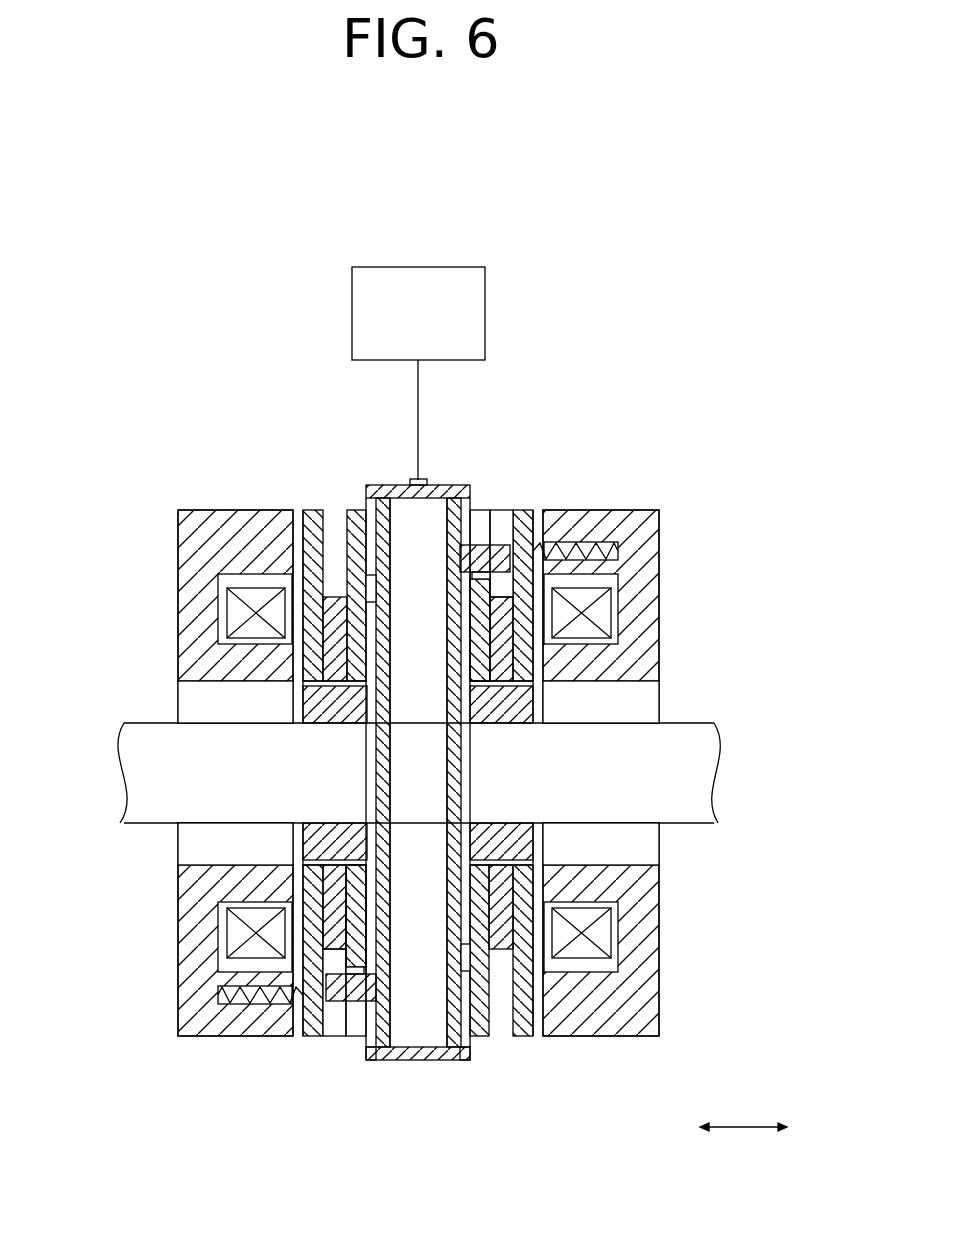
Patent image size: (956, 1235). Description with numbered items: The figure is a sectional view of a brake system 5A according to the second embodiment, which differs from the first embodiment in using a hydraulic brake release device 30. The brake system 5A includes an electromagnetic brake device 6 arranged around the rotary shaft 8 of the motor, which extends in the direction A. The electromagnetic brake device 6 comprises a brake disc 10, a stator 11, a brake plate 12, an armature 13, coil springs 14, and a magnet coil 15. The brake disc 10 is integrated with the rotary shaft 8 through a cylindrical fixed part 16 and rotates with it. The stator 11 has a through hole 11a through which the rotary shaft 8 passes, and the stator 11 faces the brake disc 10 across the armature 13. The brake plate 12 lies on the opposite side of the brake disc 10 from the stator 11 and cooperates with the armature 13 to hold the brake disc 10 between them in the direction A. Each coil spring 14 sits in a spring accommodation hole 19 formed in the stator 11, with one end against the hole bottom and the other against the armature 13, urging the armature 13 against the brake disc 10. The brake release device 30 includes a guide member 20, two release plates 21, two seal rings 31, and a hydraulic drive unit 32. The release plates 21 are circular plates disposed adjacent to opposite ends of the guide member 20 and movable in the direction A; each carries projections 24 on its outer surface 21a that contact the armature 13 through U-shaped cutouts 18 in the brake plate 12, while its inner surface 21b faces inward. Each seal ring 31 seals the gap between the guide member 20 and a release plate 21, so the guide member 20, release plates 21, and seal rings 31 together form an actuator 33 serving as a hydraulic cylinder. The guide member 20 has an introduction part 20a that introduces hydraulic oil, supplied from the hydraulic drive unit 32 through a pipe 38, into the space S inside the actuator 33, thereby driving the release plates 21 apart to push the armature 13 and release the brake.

The brake system 5A is at (641, 316).
The electromagnetic brake device 6 is at (180, 495).
The rotary shaft 8 is at (128, 772).
The brake disc 10 is at (354, 530).
The stator 11 is at (210, 545).
The through hole 11a is at (215, 863).
The brake plate 12 is at (333, 597).
The armature 13 is at (306, 530).
The coil spring 14 is at (565, 548).
The magnet coil 15 is at (235, 612).
The fixed part 16 is at (300, 708).
The cutout 18 is at (488, 548).
The spring accommodation hole 19 is at (608, 548).
The guide member 20 is at (414, 1062).
The introduction part 20a is at (427, 480).
The release plate 21 is at (376, 765).
The outer surface 21a is at (370, 490).
The inner surface 21b is at (398, 1062).
The projection 24 is at (499, 580).
The brake release device 30 is at (337, 247).
The seal ring 31 is at (385, 1062).
The hydraulic drive unit 32 is at (485, 312).
The actuator 33 is at (402, 474).
The pipe 38 is at (418, 378).
The space S is at (420, 795).
The direction A is at (743, 1114).